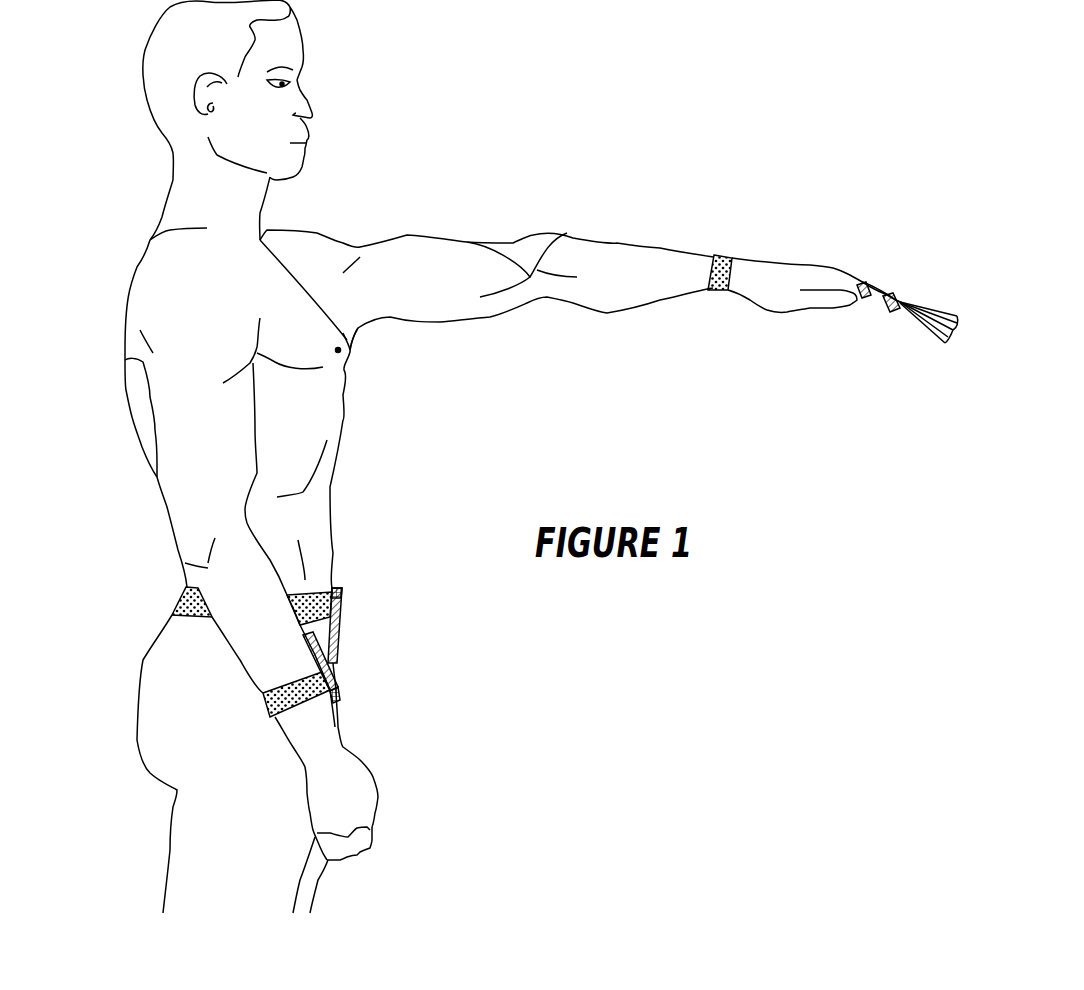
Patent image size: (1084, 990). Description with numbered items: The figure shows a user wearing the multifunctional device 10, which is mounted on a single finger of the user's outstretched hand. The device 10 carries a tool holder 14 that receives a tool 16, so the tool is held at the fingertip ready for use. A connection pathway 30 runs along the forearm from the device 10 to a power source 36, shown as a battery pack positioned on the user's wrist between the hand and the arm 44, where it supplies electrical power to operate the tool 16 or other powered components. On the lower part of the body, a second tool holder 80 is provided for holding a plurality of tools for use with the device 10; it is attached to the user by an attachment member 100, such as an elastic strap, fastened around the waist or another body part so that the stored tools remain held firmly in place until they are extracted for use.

The multifunctional device 10 is at (863, 287).
The tool holder 14 is at (897, 295).
The tool 16 is at (890, 297).
The connection pathway 30 is at (812, 267).
The power source 36 is at (722, 255).
The arm 44 is at (617, 263).
The tool holder 80 is at (343, 593).
The attachment member 100 is at (177, 603).